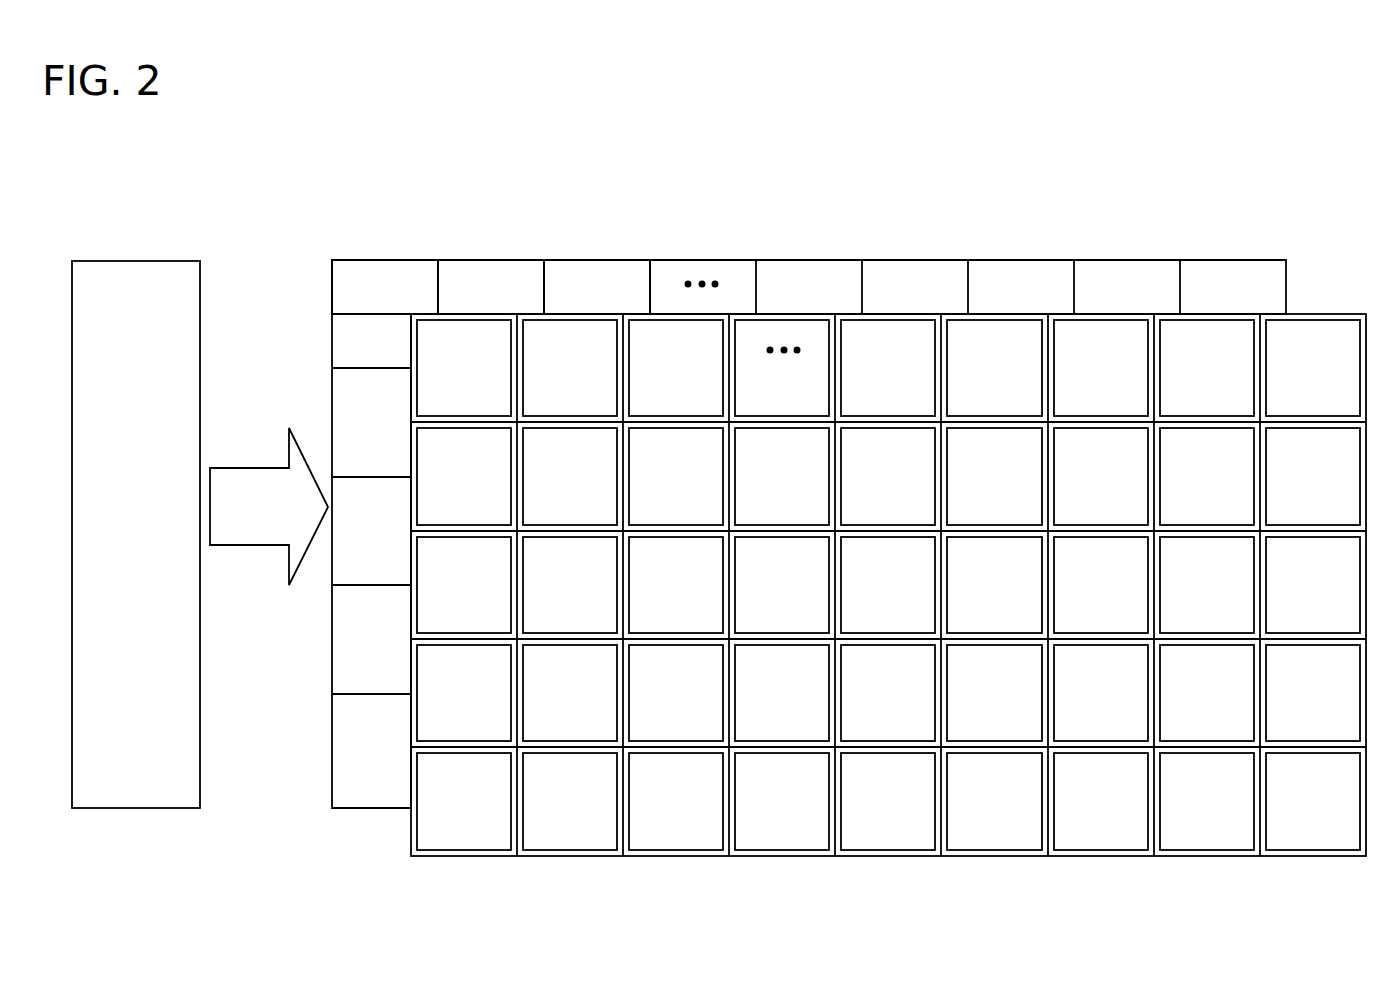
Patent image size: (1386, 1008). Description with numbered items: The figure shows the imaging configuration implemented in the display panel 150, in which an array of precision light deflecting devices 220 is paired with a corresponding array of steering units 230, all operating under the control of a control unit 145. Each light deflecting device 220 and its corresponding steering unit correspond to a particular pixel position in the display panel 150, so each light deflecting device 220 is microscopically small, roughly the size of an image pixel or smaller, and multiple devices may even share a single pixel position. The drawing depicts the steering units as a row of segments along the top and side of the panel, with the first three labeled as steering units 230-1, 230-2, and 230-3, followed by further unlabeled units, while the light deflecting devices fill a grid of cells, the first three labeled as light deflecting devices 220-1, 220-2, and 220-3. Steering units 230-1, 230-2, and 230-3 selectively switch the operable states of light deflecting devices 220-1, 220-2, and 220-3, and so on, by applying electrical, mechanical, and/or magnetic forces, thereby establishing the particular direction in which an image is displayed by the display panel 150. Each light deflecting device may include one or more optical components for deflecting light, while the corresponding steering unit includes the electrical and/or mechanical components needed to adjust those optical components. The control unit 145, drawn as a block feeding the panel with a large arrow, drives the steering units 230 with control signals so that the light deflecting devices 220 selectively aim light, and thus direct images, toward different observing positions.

The control unit 145 is at (136, 534).
The display panel 150 is at (448, 226).
The steering units 230 is at (798, 260).
The steering unit 230-1 is at (385, 287).
The steering unit 230-2 is at (491, 287).
The steering unit 230-3 is at (597, 287).
The light deflecting devices 220 is at (902, 313).
The light deflecting device 220-1 is at (464, 368).
The light deflecting device 220-2 is at (570, 368).
The light deflecting device 220-3 is at (676, 368).